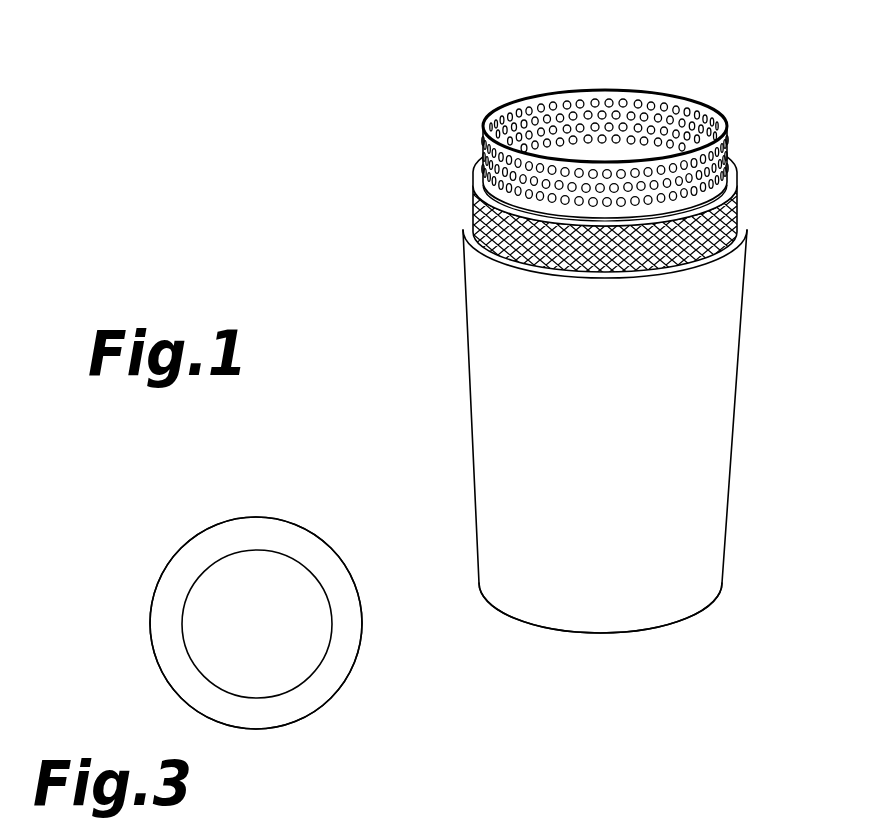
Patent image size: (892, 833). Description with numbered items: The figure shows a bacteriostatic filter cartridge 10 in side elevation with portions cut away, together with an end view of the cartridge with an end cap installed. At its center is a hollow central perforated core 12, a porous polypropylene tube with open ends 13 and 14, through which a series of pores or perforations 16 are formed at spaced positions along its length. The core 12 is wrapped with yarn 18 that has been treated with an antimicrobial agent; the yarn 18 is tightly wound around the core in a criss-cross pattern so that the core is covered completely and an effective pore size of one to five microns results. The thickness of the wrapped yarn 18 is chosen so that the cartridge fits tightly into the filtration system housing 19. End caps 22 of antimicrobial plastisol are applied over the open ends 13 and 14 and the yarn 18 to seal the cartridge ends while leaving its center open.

In FIG. 1, the bacteriostatic filter cartridge 10 is at (455, 307).
In FIG. 3, the bacteriostatic filter cartridge 10 is at (148, 587).
In FIG. 1, the hollow central perforated core 12 is at (598, 89).
In FIG. 1, the open end 13 is at (690, 98).
In FIG. 1, the open end 14 is at (667, 628).
In FIG. 1, the pores or perforations 16 is at (563, 97).
In FIG. 1, the yarn 18 is at (738, 207).
In FIG. 1, the filtration system housing 19 is at (462, 236).
In FIG. 3, the end caps 22 is at (272, 518).